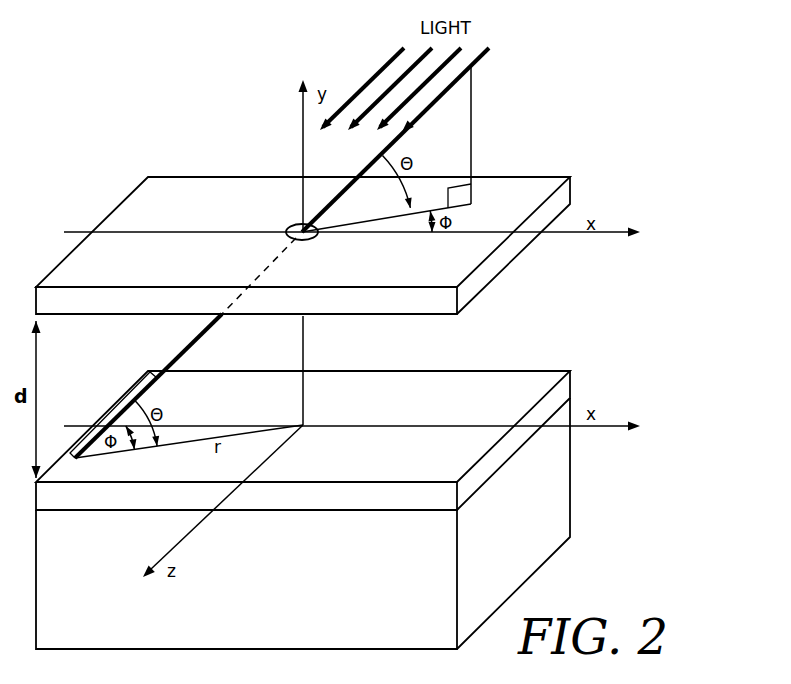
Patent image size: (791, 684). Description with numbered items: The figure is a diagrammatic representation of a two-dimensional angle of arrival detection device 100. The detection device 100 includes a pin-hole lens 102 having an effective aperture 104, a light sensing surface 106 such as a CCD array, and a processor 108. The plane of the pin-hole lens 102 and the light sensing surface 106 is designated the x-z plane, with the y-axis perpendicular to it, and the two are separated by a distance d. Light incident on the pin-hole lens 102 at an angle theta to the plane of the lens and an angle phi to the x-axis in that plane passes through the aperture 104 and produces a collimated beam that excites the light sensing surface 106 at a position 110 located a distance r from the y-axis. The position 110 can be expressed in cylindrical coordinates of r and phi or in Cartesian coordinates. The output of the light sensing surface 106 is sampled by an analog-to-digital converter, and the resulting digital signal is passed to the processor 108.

The detection device 100 is at (656, 593).
The pin-hole lens 102 is at (565, 200).
The effective aperture 104 is at (292, 226).
The light sensing surface 106 is at (562, 392).
The processor 108 is at (558, 530).
The position 110 is at (66, 450).